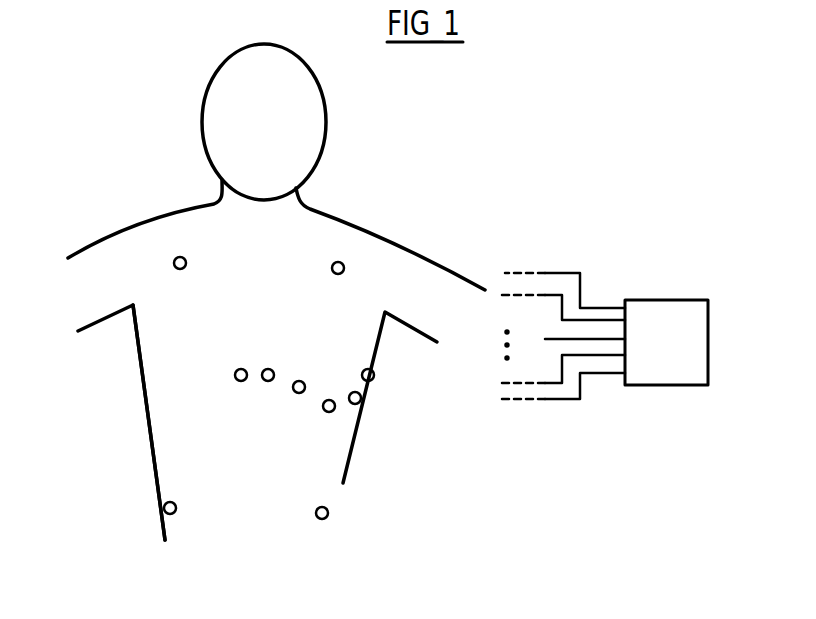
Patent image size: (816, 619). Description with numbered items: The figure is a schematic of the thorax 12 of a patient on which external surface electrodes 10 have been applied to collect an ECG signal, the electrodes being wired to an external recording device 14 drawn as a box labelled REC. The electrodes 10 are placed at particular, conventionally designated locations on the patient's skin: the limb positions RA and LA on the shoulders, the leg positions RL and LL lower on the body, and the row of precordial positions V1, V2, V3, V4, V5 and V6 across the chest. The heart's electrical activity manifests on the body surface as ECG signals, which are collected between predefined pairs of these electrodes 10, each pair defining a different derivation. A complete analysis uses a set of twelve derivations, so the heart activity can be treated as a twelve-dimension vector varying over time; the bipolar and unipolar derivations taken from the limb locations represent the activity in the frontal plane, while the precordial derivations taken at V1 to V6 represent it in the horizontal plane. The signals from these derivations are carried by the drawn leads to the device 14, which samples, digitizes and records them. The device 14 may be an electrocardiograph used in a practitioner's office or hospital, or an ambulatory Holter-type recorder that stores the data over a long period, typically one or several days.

The electrodes 10 is at (178, 257).
The thorax 12 is at (158, 417).
The device 14 is at (670, 300).
The right arm electrode location RA is at (186, 260).
The left arm electrode location LA is at (344, 268).
The right leg electrode location RL is at (176, 508).
The left leg electrode location LL is at (328, 515).
The precordial electrode location V1 is at (241, 369).
The precordial electrode location V2 is at (268, 369).
The precordial electrode location V3 is at (302, 381).
The precordial electrode location V4 is at (327, 412).
The precordial electrode location V5 is at (361, 397).
The precordial electrode location V6 is at (374, 372).